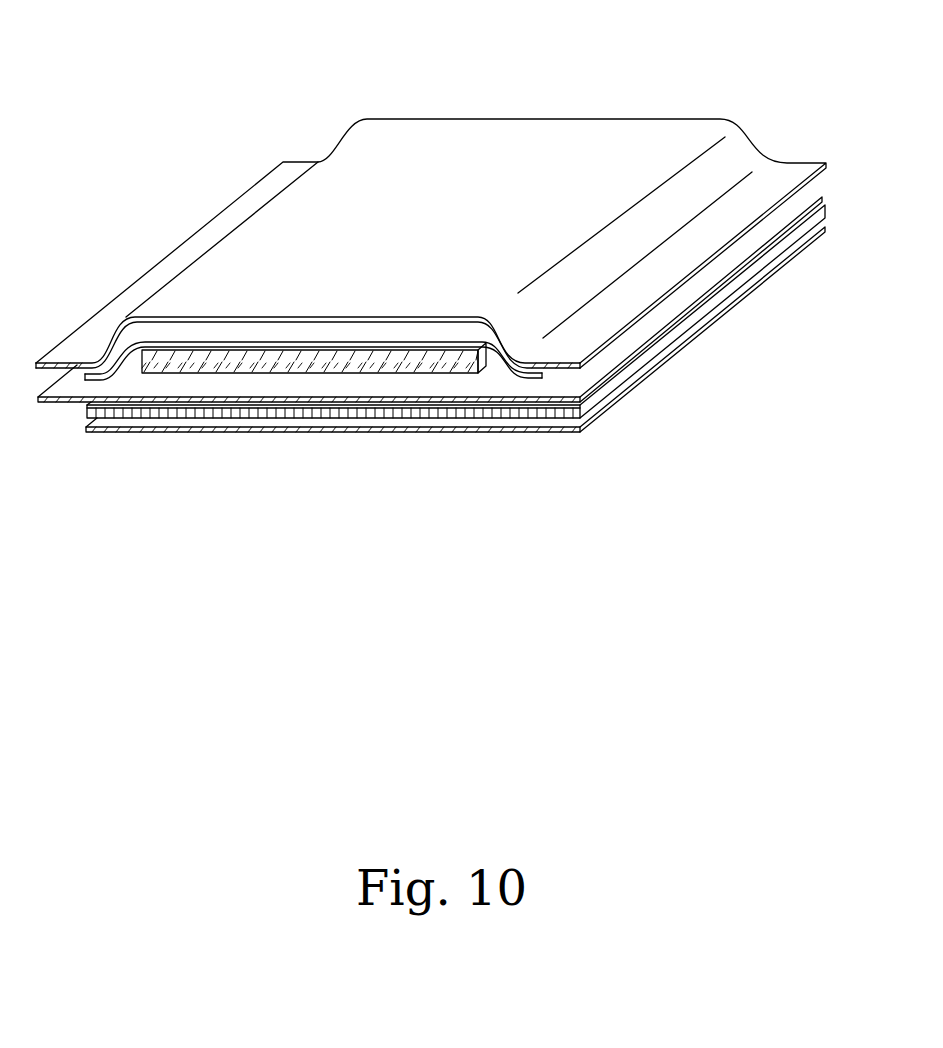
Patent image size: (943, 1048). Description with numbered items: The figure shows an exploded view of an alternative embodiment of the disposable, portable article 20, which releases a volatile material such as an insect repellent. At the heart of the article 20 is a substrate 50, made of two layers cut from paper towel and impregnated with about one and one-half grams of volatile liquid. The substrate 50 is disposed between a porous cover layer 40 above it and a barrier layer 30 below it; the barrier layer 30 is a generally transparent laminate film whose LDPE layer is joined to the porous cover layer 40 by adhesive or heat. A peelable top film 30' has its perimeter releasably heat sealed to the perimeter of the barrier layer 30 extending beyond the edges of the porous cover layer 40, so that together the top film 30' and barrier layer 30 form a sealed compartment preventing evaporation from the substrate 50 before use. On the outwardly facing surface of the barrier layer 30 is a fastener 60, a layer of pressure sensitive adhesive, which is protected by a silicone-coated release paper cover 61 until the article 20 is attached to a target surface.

The article 20 is at (553, 104).
The peelable top film 30' is at (431, 206).
The barrier layer 30 is at (430, 388).
The porous cover layer 40 is at (275, 340).
The substrate 50 is at (427, 364).
The fastener 60 is at (323, 420).
The release paper cover 61 is at (292, 434).